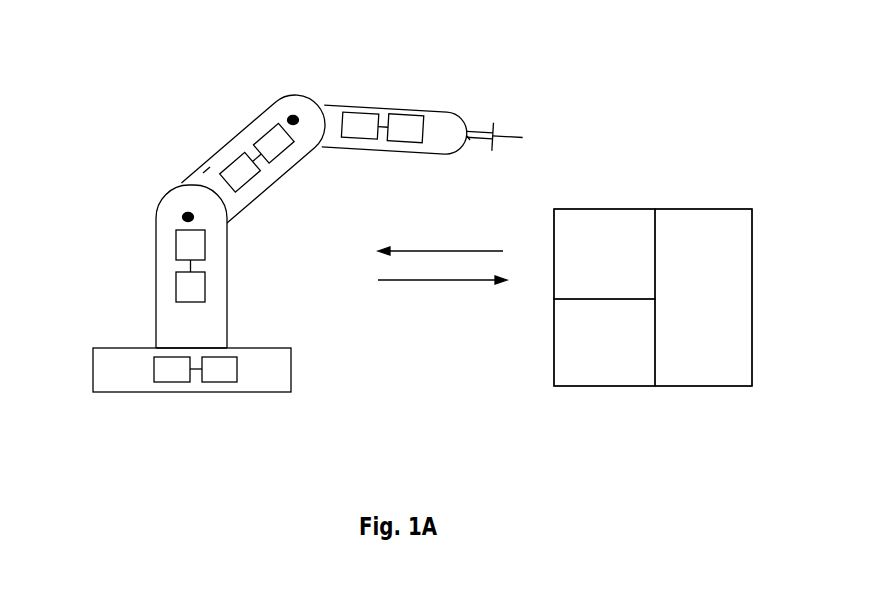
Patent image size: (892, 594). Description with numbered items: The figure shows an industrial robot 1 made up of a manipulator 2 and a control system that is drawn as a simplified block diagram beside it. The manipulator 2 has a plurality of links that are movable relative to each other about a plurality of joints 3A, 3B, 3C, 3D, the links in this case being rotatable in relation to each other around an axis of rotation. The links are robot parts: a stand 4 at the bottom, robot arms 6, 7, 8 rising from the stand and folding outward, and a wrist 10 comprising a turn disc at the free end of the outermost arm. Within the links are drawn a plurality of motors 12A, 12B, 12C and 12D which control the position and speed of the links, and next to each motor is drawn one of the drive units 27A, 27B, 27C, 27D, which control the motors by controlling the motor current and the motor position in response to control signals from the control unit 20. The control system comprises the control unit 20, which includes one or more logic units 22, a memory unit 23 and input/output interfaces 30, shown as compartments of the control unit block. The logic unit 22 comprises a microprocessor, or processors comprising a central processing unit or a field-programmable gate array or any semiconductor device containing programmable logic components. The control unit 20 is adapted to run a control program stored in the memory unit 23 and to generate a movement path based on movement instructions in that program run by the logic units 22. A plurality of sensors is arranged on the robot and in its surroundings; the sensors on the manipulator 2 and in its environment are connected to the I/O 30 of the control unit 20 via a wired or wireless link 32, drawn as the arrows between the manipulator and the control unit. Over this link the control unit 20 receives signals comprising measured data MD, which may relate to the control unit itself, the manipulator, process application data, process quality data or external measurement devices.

The industrial robot 1 is at (602, 78).
The manipulator 2 is at (280, 167).
The joint 3A is at (193, 355).
The joint 3B is at (183, 215).
The joint 3C is at (292, 113).
The joint 3D is at (470, 143).
The stand 4 is at (277, 375).
The robot arm 6 is at (218, 247).
The robot arm 7 is at (203, 173).
The robot arm 8 is at (330, 113).
The wrist 10 is at (480, 121).
The motor 12A is at (172, 372).
The motor 12B is at (180, 243).
The motor 12C is at (205, 146).
The motor 12D is at (357, 118).
The control unit 20 is at (699, 142).
The logic unit 22 is at (710, 220).
The memory unit 23 is at (598, 373).
The drive unit 27A is at (217, 370).
The drive unit 27B is at (188, 288).
The drive unit 27C is at (265, 135).
The drive unit 27D is at (405, 118).
The input/output interfaces 30 is at (600, 220).
The wired or wireless link 32 is at (442, 269).